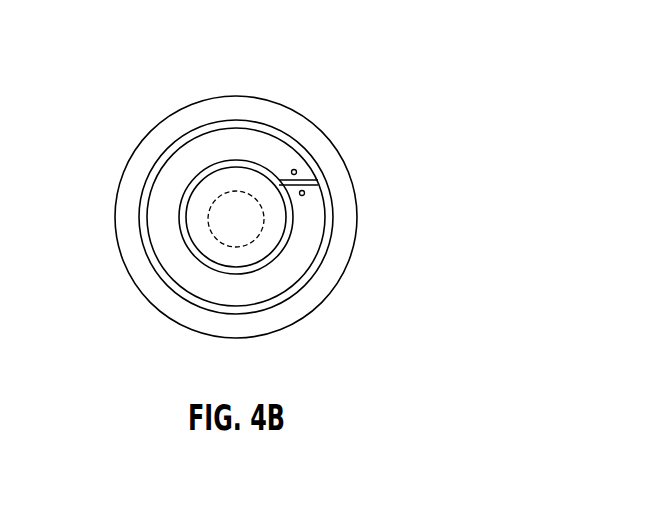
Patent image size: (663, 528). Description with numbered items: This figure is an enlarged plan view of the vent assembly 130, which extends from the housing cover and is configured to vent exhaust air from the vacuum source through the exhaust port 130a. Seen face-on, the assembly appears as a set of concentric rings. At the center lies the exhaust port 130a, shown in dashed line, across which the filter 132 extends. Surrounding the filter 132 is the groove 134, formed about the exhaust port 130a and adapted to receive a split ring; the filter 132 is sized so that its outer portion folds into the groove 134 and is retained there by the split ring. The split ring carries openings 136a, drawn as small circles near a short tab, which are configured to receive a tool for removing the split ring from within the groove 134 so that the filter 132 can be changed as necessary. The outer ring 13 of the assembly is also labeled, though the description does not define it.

The vent assembly 130 is at (345, 84).
The outer ring 13 is at (313, 227).
The groove 134 is at (327, 253).
The filter 132 is at (235, 235).
The exhaust port 130a is at (207, 221).
The openings 136a is at (302, 190).